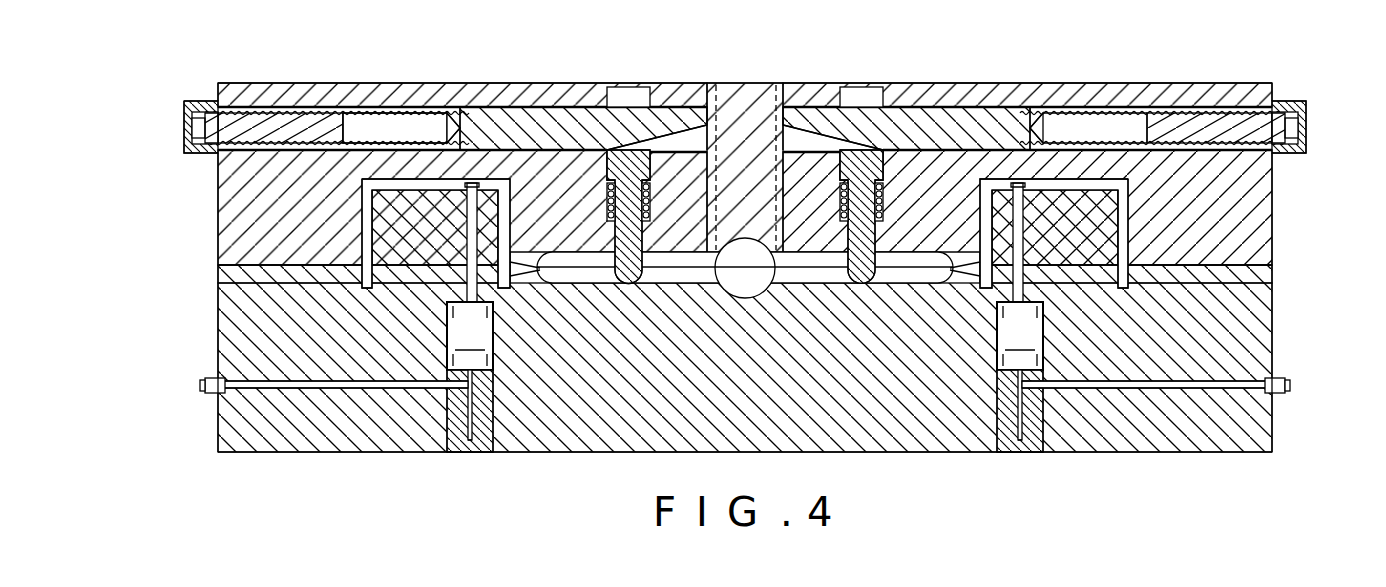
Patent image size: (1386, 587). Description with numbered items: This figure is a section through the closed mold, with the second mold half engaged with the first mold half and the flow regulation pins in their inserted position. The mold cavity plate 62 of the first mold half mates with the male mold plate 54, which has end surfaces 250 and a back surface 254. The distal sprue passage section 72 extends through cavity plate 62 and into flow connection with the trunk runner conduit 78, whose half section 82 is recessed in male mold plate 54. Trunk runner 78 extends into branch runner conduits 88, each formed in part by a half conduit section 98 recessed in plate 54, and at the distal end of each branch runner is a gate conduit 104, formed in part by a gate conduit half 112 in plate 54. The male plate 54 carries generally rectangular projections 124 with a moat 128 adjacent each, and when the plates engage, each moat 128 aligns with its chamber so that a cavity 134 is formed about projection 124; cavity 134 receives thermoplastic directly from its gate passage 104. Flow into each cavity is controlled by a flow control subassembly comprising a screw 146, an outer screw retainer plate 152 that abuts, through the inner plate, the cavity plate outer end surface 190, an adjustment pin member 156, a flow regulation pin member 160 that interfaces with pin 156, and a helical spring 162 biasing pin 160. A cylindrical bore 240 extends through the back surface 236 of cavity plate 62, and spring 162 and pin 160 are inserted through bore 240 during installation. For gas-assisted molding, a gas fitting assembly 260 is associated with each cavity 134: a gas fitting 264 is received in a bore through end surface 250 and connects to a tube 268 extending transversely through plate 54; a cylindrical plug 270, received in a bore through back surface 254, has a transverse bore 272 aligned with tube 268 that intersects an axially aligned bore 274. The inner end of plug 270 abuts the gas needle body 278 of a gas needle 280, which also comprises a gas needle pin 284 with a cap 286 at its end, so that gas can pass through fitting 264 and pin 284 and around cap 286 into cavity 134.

The outer screw retainer plate 152 is at (188, 100).
The screw 146 is at (285, 83).
The adjustment pin member 156 is at (467, 127).
The cap 286 is at (492, 180).
The helical spring 162 is at (614, 188).
The flow regulation pin member 160 is at (607, 197).
The cylindrical bore 240 is at (630, 87).
The back surface 236 is at (686, 83).
The distal sprue passage section 72 is at (740, 117).
The gate conduit 104 is at (935, 215).
The cavity 134 is at (402, 184).
The projection 124 is at (370, 216).
The mold cavity plate 62 is at (216, 211).
The gas needle pin 284 is at (467, 256).
The cavity plate outer end surface 190 is at (218, 249).
The moat 128 is at (362, 286).
The male mold plate 54 is at (216, 306).
The gas needle body 278 is at (462, 317).
The end surface 250 is at (218, 357).
The tube 268 is at (284, 388).
The gas fitting assembly 260 is at (438, 464).
The transverse bore 272 is at (460, 453).
The axially aligned bore 274 is at (472, 453).
The cylindrical plug 270 is at (482, 453).
The gate conduit half 112 is at (520, 290).
The half conduit section 98 is at (568, 273).
The branch runner conduit 88 is at (598, 283).
The trunk runner conduit 78 is at (732, 291).
The half section 82 is at (764, 285).
The back surface 254 is at (862, 453).
The gas fitting 264 is at (1285, 394).
The gas needle 280 is at (745, 336).